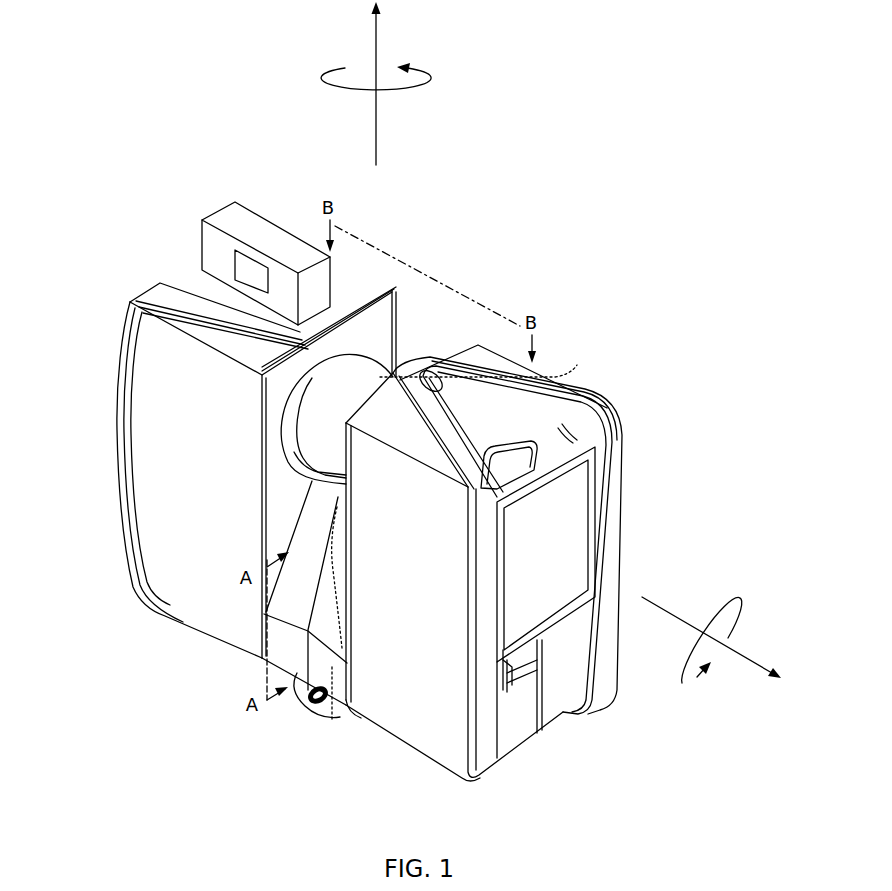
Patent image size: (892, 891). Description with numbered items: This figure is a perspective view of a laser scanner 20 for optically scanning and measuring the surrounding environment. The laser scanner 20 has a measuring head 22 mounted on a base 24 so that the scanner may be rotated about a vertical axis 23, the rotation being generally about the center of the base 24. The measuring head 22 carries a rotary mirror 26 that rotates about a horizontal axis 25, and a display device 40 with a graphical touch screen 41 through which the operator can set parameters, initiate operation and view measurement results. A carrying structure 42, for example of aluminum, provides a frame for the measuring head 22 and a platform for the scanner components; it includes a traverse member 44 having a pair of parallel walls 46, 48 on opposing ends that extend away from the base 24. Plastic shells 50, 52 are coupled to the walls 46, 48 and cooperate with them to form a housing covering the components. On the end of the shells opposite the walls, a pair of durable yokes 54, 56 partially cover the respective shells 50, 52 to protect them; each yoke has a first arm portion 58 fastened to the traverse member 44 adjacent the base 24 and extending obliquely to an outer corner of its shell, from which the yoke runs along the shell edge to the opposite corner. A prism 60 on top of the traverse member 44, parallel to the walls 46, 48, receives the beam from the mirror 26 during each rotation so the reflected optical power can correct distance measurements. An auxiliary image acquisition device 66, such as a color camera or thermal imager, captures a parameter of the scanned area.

The laser scanner 20 is at (226, 91).
The measuring head 22 is at (586, 300).
The vertical axis 23 is at (380, 47).
The base 24 is at (316, 698).
The horizontal axis 25 is at (757, 660).
The rotary mirror 26 is at (491, 371).
The display device 40 is at (648, 529).
The graphical touch screen 41 is at (567, 505).
The carrying structure 42 is at (212, 722).
The traverse member 44 is at (333, 708).
The wall 46 is at (462, 350).
The wall 48 is at (384, 327).
The shell 50 is at (160, 496).
The shell 52 is at (455, 708).
The yoke 54 is at (580, 402).
The yoke 56 is at (172, 287).
The first arm portion 58 is at (143, 607).
The prism 60 is at (333, 667).
The auxiliary image acquisition device 66 is at (204, 218).